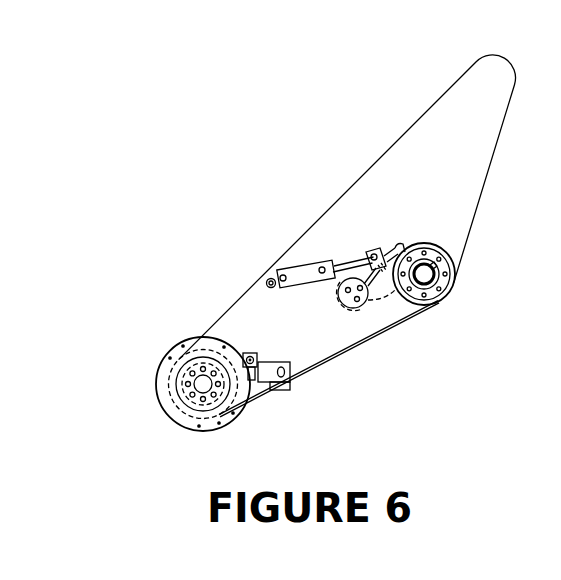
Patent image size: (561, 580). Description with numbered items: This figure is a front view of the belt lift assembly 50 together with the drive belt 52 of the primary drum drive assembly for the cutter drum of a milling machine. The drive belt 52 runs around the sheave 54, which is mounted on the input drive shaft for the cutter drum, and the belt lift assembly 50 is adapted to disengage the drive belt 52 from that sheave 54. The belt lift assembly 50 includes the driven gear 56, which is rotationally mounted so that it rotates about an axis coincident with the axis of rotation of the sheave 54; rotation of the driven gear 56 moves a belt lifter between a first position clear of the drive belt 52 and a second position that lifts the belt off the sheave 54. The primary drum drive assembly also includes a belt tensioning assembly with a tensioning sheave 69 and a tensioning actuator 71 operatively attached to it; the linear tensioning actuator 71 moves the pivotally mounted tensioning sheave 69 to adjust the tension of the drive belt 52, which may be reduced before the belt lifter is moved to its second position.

The belt lift assembly 50 is at (126, 421).
The drive belt 52 is at (322, 203).
The sheave 54 is at (184, 427).
The driven gear 56 is at (155, 357).
The tensioning sheave 69 is at (432, 230).
The tensioning actuator 71 is at (320, 256).